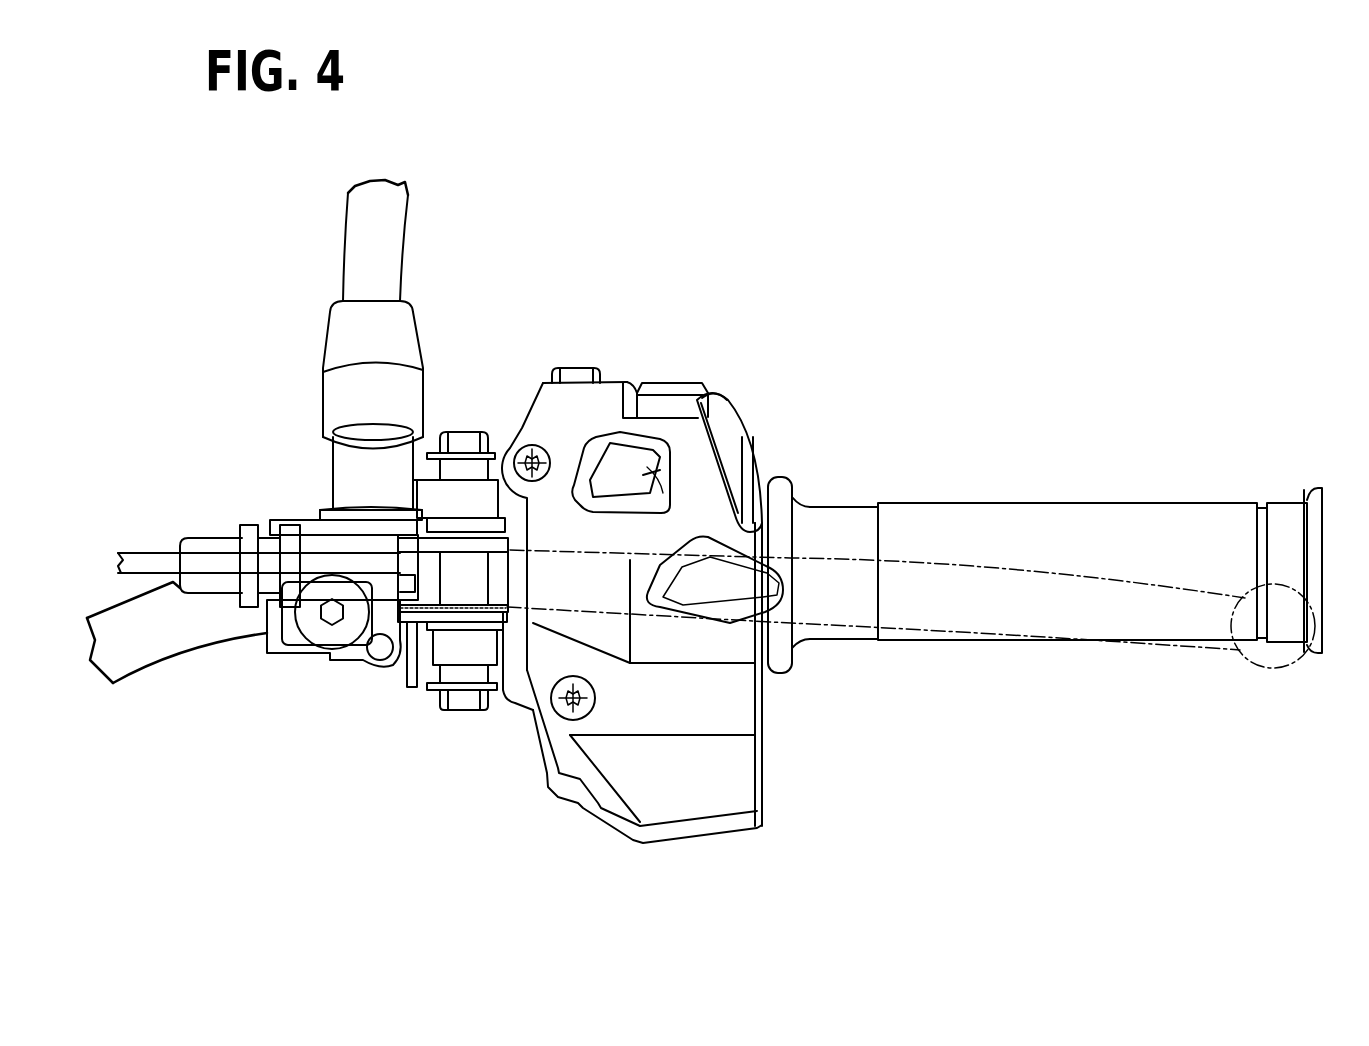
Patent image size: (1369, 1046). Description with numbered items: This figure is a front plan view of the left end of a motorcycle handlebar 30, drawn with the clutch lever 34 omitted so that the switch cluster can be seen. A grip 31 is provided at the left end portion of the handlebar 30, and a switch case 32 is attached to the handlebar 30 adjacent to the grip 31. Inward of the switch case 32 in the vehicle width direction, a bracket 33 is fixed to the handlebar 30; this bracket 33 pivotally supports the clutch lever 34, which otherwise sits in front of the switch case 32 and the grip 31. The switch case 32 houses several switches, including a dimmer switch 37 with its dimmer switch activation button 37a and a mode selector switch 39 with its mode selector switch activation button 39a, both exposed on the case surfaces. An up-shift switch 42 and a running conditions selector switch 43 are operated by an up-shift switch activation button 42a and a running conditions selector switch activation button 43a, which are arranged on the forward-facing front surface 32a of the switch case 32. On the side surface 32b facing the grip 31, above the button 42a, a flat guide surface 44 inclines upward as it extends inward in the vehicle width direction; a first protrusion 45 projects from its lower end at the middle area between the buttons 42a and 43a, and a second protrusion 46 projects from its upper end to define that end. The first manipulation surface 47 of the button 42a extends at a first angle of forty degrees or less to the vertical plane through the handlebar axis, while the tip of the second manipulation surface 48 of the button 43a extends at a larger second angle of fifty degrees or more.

The handlebar 30 is at (190, 640).
The grip 31 is at (978, 523).
The switch case 32 is at (522, 427).
The front surface 32a is at (653, 653).
The side surface 32b is at (773, 543).
The bracket 33 is at (462, 627).
The clutch lever 34 is at (1087, 568).
The dimmer switch 37 is at (683, 382).
The dimmer switch activation button 37a is at (670, 388).
The mode selector switch 39 is at (577, 368).
The mode selector switch activation button 39a is at (565, 370).
The up-shift switch 42 is at (715, 608).
The up-shift switch activation button 42a is at (783, 585).
The running conditions selector switch 43 is at (614, 504).
The running conditions selector switch activation button 43a is at (628, 496).
The guide surface 44 is at (722, 417).
The first protrusion 45 is at (762, 493).
The second protrusion 46 is at (727, 402).
The first manipulation surface 47 is at (730, 593).
The second manipulation surface 48 is at (643, 475).